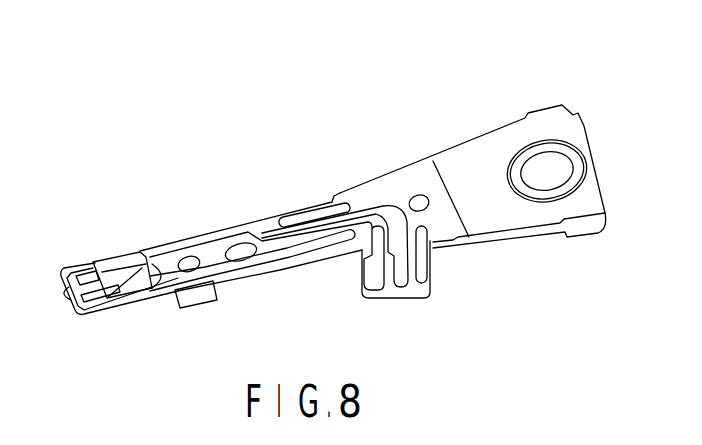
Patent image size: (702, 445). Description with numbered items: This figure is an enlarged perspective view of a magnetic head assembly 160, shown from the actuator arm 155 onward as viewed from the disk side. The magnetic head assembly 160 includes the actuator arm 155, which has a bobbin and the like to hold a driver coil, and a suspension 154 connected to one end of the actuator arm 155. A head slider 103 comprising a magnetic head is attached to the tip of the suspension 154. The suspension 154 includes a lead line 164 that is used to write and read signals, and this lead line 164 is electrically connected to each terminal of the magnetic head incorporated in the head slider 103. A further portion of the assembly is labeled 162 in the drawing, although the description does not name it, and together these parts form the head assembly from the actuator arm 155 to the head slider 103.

The magnetic head assembly 160 is at (194, 118).
The suspension 154 is at (265, 222).
The head slider 103 is at (115, 253).
The lead line 164 is at (215, 275).
The flexure tail terminal portion 162 is at (412, 287).
The actuator arm 155 is at (526, 216).